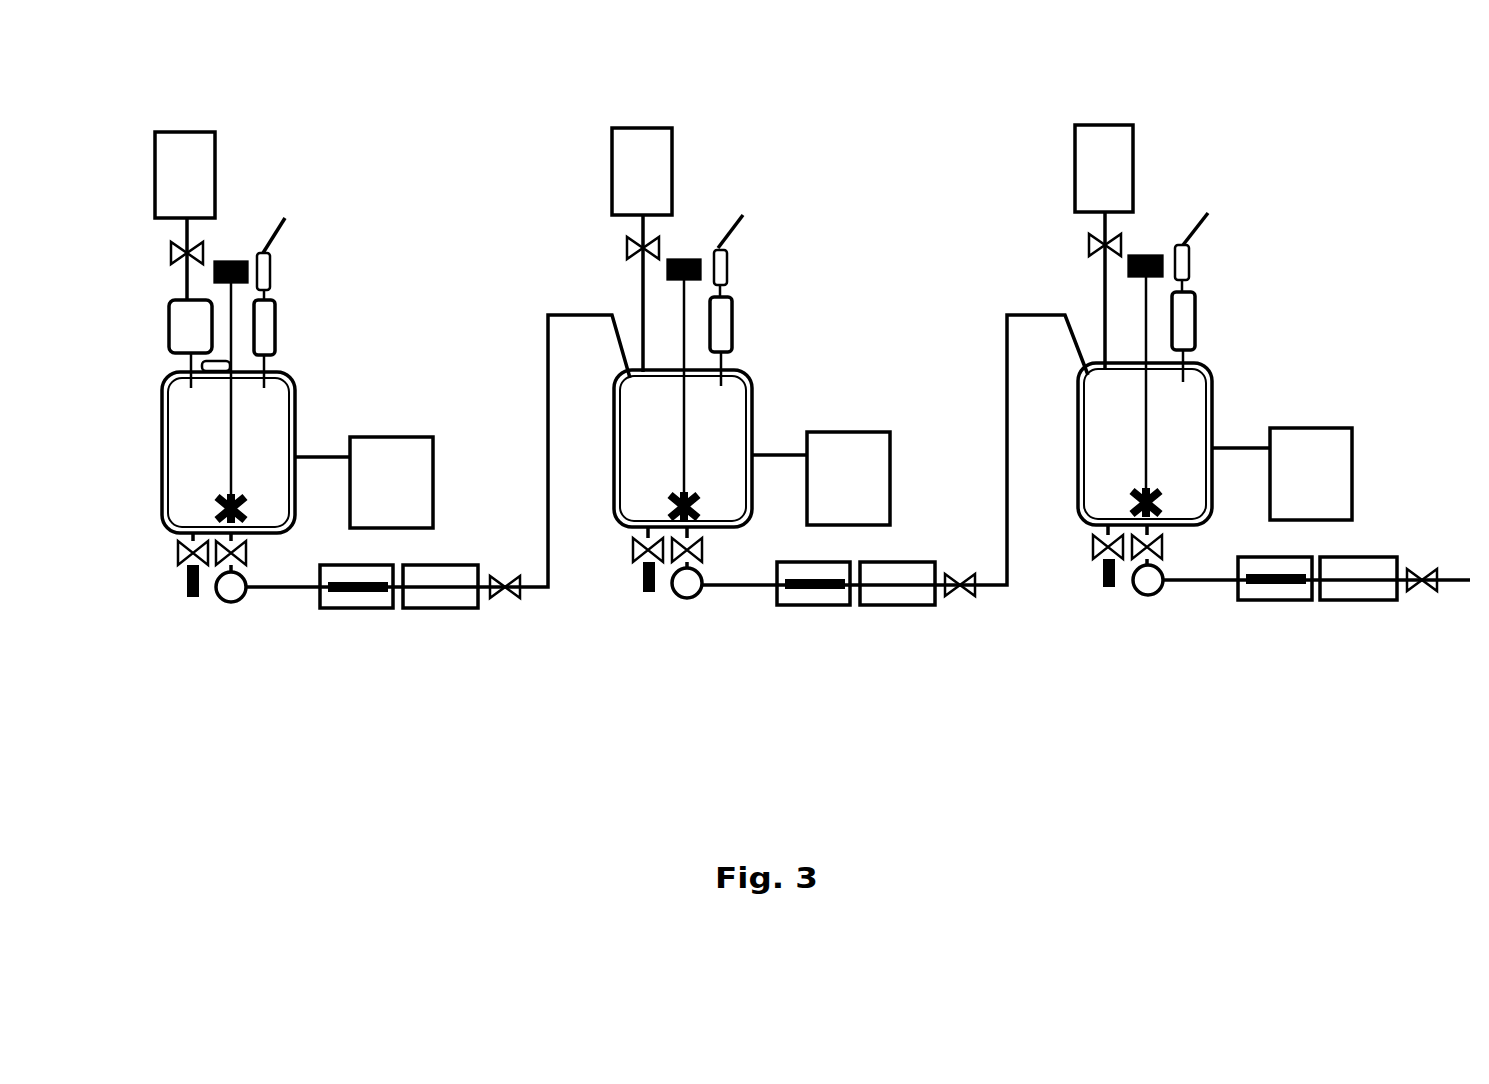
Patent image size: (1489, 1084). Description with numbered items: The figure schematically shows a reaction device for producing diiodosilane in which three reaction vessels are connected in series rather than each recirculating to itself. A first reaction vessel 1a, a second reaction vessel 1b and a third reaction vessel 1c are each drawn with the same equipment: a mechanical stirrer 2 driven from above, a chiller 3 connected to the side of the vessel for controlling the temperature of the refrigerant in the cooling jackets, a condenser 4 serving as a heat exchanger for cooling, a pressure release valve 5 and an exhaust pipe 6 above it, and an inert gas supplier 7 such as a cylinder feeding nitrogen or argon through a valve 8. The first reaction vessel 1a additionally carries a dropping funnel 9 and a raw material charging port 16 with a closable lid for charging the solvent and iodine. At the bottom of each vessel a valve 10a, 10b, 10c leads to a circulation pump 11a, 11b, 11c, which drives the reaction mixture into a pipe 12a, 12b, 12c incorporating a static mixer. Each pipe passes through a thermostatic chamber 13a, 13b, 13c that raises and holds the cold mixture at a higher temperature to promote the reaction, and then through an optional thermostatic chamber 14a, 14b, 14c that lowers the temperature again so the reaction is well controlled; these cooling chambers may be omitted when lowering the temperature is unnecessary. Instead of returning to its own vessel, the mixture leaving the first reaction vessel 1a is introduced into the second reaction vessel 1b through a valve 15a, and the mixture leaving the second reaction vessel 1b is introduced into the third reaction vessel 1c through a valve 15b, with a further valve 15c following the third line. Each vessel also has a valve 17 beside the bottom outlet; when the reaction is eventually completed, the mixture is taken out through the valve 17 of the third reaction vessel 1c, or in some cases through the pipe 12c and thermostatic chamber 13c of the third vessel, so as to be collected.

The first reaction vessel 1a is at (296, 392).
The second reaction vessel 1b is at (753, 388).
The third reaction vessel 1c is at (1213, 385).
The mechanical stirrer 2 is at (232, 262).
The chiller 3 is at (434, 485).
The condenser 4 is at (276, 325).
The pressure release valve 5 is at (272, 270).
The exhaust pipe 6 is at (280, 233).
The inert gas supplier 7 is at (215, 190).
The valve 8 is at (172, 250).
The dropping funnel 9 is at (168, 322).
The valve 10a is at (245, 553).
The valve 10b is at (700, 552).
The valve 10c is at (1160, 547).
The circulation pump 11a is at (240, 600).
The circulation pump 11b is at (700, 597).
The circulation pump 11c is at (1160, 592).
The pipe 12a is at (360, 586).
The pipe 12b is at (820, 584).
The pipe 12c is at (1280, 579).
The thermostatic chamber 13a is at (358, 608).
The thermostatic chamber 13b is at (812, 605).
The thermostatic chamber 13c is at (1270, 600).
The thermostatic chamber 14a is at (440, 608).
The thermostatic chamber 14b is at (905, 605).
The thermostatic chamber 14c is at (1355, 600).
The valve 15a is at (508, 598).
The valve 15b is at (962, 597).
The valve 15c is at (1425, 592).
The raw material charging port 16 is at (232, 366).
The valve 17 is at (178, 553).